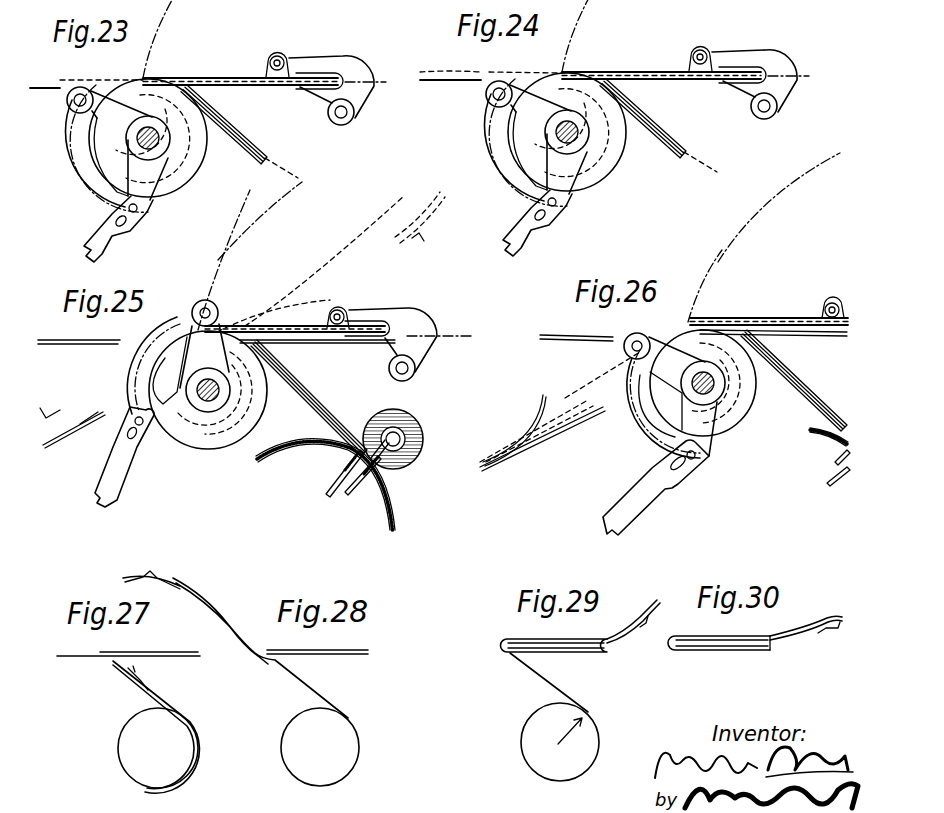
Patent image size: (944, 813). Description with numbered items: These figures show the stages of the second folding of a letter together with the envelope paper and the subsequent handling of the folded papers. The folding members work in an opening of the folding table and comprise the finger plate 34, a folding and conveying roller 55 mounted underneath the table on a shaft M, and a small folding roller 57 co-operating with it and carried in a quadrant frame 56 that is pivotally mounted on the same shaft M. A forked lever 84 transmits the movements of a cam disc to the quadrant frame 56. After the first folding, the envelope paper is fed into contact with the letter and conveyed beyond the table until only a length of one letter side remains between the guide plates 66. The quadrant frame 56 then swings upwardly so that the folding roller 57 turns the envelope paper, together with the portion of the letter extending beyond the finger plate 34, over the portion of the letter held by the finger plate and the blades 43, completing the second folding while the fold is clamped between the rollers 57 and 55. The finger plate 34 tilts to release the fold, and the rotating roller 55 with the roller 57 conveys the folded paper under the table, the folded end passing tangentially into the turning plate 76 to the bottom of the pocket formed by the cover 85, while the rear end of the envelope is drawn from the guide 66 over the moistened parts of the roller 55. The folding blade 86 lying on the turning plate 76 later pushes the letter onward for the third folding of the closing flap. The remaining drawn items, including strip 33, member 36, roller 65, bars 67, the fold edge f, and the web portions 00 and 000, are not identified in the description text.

In FIG. 25, the guide strip 33 is at (338, 344).
In FIG. 26, the guide strip 33 is at (568, 339).
In FIG. 23, the finger plate 34 is at (208, 78).
In FIG. 24, the finger plate 34 is at (661, 60).
In FIG. 25, the finger plate 34 is at (305, 324).
In FIG. 26, the finger plate 34 is at (774, 316).
In FIG. 23, the clamp 36 is at (355, 60).
In FIG. 24, the clamp 36 is at (757, 83).
In FIG. 25, the clamp 36 is at (432, 326).
In FIG. 23, the blades 43 is at (310, 74).
In FIG. 24, the blades 43 is at (752, 54).
In FIG. 23, the folding and conveying roller 55 is at (168, 191).
In FIG. 24, the folding and conveying roller 55 is at (568, 142).
In FIG. 25, the folding and conveying roller 55 is at (206, 450).
In FIG. 26, the folding and conveying roller 55 is at (735, 431).
In FIG. 23, the quadrant frame 56 is at (63, 146).
In FIG. 24, the quadrant frame 56 is at (505, 142).
In FIG. 25, the quadrant frame 56 is at (124, 386).
In FIG. 26, the quadrant frame 56 is at (647, 448).
In FIG. 23, the folding roller 57 is at (78, 93).
In FIG. 24, the folding roller 57 is at (516, 137).
In FIG. 25, the folding roller 57 is at (218, 311).
In FIG. 26, the folding roller 57 is at (638, 334).
In FIG. 25, the pulley 65 is at (400, 470).
In FIG. 23, the guide plates 66 is at (232, 128).
In FIG. 24, the guide plates 66 is at (647, 118).
In FIG. 25, the guide plates 66 is at (310, 403).
In FIG. 26, the guide plates 66 is at (805, 395).
In FIG. 25, the guide bars 67 is at (362, 495).
In FIG. 25, the turning plate 76 is at (60, 447).
In FIG. 26, the turning plate 76 is at (541, 446).
In FIG. 23, the forked lever 84 is at (97, 236).
In FIG. 24, the forked lever 84 is at (527, 223).
In FIG. 25, the forked lever 84 is at (134, 458).
In FIG. 26, the forked lever 84 is at (638, 487).
In FIG. 25, the cover 85 is at (57, 414).
In FIG. 26, the cover 85 is at (537, 406).
In FIG. 25, the folding blade 86 is at (88, 420).
In FIG. 26, the folding blade 86 is at (588, 400).
In FIG. 23, the shaft M is at (156, 143).
In FIG. 24, the shaft M is at (590, 144).
In FIG. 25, the shaft M is at (220, 395).
In FIG. 26, the shaft M is at (712, 387).
In FIG. 25, the fold edge f is at (420, 221).
In FIG. 26, the fold edge f is at (618, 378).
In FIG. 27, the fold edge f is at (154, 672).
In FIG. 29, the fold edge f is at (633, 621).
In FIG. 30, the fold edge f is at (806, 639).
In FIG. 23, the web portion 00 is at (284, 171).
In FIG. 24, the web portion 00 is at (577, 107).
In FIG. 25, the web portion 00 is at (366, 262).
In FIG. 26, the web portion 00 is at (808, 406).
In FIG. 28, the web portion 00 is at (216, 616).
In FIG. 29, the web portion 00 is at (531, 668).
In FIG. 30, the web portion 00 is at (770, 637).
In FIG. 23, the web portion 000 is at (128, 71).
In FIG. 24, the web portion 000 is at (525, 59).
In FIG. 26, the web portion 000 is at (578, 420).
In FIG. 27, the web portion 000 is at (186, 642).
In FIG. 28, the web portion 000 is at (353, 650).
In FIG. 29, the web portion 000 is at (582, 651).
In FIG. 30, the web portion 000 is at (738, 641).